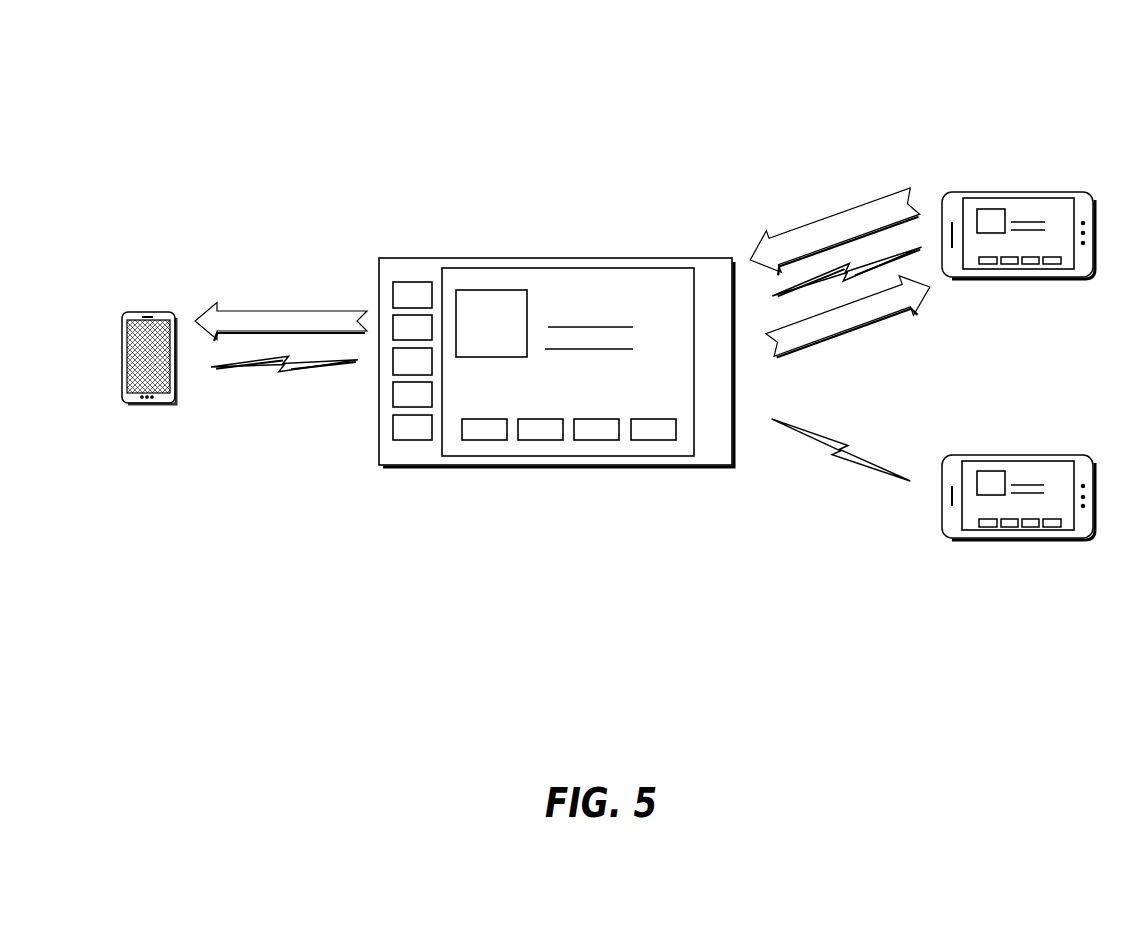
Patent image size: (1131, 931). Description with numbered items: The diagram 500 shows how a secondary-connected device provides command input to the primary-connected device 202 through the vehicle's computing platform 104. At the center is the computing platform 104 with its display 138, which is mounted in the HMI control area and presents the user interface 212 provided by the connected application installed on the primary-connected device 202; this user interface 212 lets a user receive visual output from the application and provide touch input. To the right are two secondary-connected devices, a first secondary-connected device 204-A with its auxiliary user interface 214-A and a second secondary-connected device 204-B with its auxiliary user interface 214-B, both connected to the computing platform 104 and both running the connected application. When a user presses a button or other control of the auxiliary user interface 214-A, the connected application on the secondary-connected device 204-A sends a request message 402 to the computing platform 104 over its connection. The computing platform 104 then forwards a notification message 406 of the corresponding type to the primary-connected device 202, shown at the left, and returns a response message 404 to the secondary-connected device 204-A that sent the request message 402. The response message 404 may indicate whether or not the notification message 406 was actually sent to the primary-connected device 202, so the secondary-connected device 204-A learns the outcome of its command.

The diagram 500 is at (157, 57).
The primary-connected device 202 is at (136, 283).
The notification message 406 is at (286, 310).
The computing platform 104 is at (596, 262).
The display 138 is at (583, 265).
The user interface 212 is at (648, 280).
The request message 402 is at (823, 220).
The response message 404 is at (847, 333).
The secondary-connected device 204-A is at (963, 192).
The auxiliary user interface 214-A is at (1018, 203).
The secondary-connected device 204-B is at (963, 455).
The auxiliary user interface 214-B is at (1018, 465).